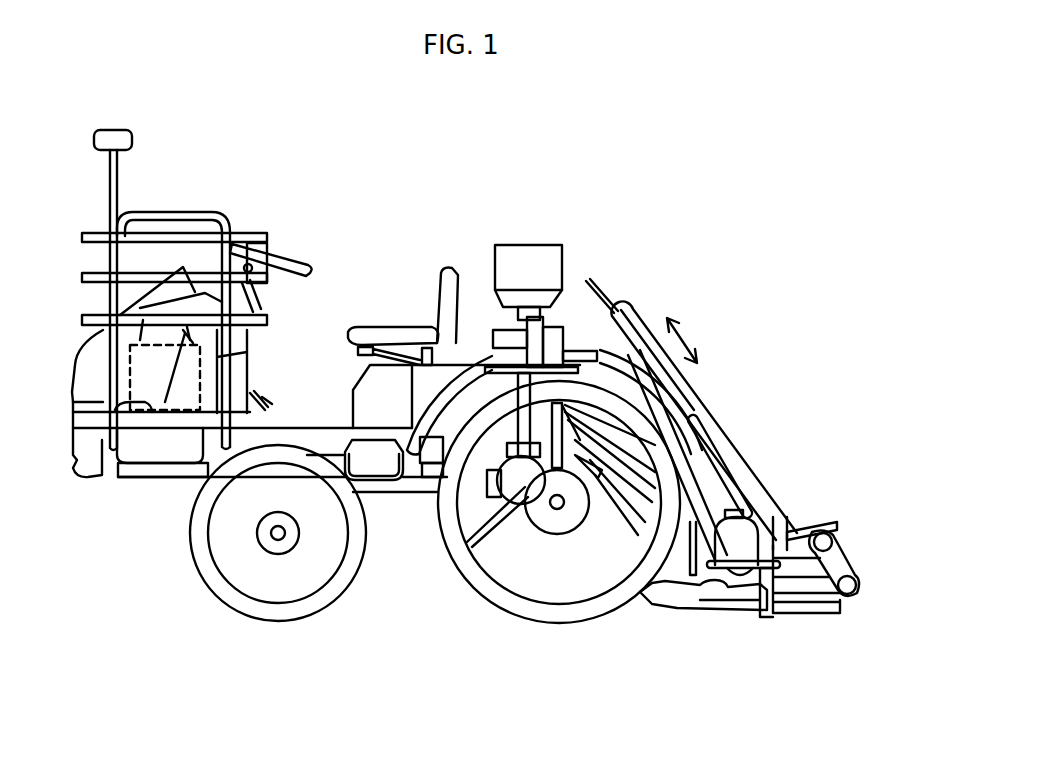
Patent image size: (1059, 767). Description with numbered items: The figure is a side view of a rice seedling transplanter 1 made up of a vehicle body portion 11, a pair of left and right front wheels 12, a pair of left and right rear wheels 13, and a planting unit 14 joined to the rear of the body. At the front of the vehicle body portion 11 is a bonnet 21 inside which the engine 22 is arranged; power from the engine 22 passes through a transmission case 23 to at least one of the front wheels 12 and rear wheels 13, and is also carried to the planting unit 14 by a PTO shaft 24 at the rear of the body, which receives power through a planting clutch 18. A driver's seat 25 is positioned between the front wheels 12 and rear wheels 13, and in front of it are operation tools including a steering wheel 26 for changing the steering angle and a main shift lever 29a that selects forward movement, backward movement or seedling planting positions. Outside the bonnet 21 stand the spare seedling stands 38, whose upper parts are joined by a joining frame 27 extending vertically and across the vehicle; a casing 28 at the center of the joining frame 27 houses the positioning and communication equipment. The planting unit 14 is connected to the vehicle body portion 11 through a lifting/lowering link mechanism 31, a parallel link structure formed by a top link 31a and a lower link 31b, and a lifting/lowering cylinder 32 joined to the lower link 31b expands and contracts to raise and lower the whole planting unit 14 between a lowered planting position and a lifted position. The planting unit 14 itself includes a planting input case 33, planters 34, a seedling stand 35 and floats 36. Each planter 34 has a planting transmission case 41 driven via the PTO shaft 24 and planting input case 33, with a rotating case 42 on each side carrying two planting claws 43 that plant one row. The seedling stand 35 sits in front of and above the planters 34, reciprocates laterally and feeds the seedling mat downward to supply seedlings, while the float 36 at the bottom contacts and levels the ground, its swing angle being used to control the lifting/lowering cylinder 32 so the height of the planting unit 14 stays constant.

The rice seedling transplanter 1 is at (707, 114).
The vehicle body portion 11 is at (346, 192).
The front wheels 12 is at (225, 593).
The rear wheels 13 is at (470, 567).
The planting unit 14 is at (775, 287).
The planting clutch 18 is at (520, 483).
The bonnet 21 is at (73, 400).
The engine 22 is at (167, 415).
The transmission case 23 is at (335, 462).
The PTO shaft 24 is at (633, 516).
The driver's seat 25 is at (398, 333).
The steering wheel 26 is at (303, 268).
The joining frame 27 is at (120, 187).
The casing 28 is at (117, 133).
The main shift lever 29a is at (250, 268).
The lifting/lowering link mechanism 31 is at (600, 463).
The top link 31a is at (663, 433).
The lower link 31b is at (590, 435).
The lifting/lowering cylinder 32 is at (483, 450).
The planting input case 33 is at (750, 520).
The planters 34 is at (810, 500).
The seedling stand 35 is at (632, 318).
The float 36 is at (727, 600).
The spare seedling stands 38 is at (203, 277).
The planting transmission case 41 is at (798, 595).
The rotating case 42 is at (852, 540).
The planting claws 43 is at (800, 522).